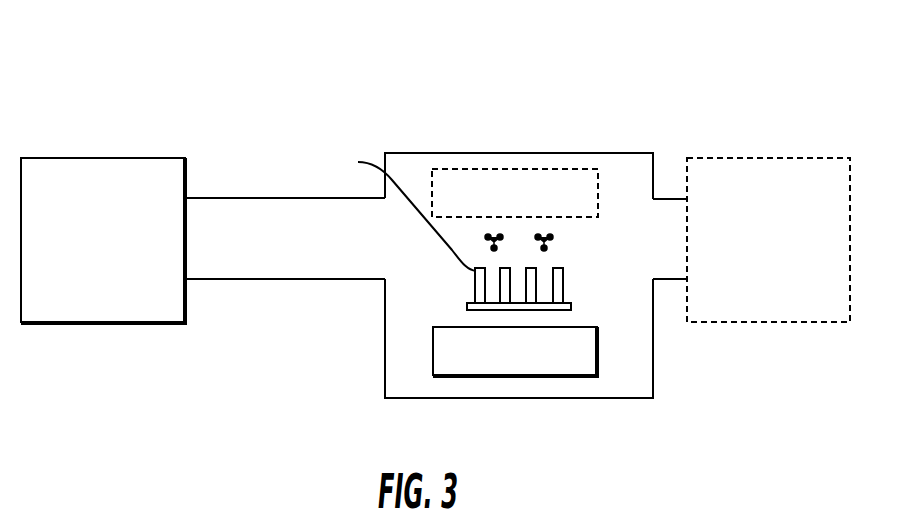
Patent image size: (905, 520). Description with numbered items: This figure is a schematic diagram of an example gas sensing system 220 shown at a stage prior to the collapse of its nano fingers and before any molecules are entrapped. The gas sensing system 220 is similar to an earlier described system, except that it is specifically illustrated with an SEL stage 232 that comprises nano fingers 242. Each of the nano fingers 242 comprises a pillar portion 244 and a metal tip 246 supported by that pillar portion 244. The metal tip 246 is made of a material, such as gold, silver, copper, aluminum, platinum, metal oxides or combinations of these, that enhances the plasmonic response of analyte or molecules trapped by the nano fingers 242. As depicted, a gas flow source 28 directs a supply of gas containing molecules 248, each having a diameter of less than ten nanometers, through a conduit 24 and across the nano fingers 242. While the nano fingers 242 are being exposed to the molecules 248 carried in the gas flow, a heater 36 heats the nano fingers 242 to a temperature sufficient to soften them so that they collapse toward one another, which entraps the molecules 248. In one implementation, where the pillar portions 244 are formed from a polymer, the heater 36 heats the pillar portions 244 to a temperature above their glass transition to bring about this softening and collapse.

The gas sensing system 220 is at (162, 88).
The gas flow source 28 is at (97, 323).
The conduit 24 is at (294, 198).
The SEL stage 232 is at (580, 287).
The heater 36 is at (518, 169).
The metal tip 246 is at (398, 209).
The nano fingers 242 is at (460, 286).
The pillar portion 244 is at (467, 298).
The molecules 248 is at (556, 239).